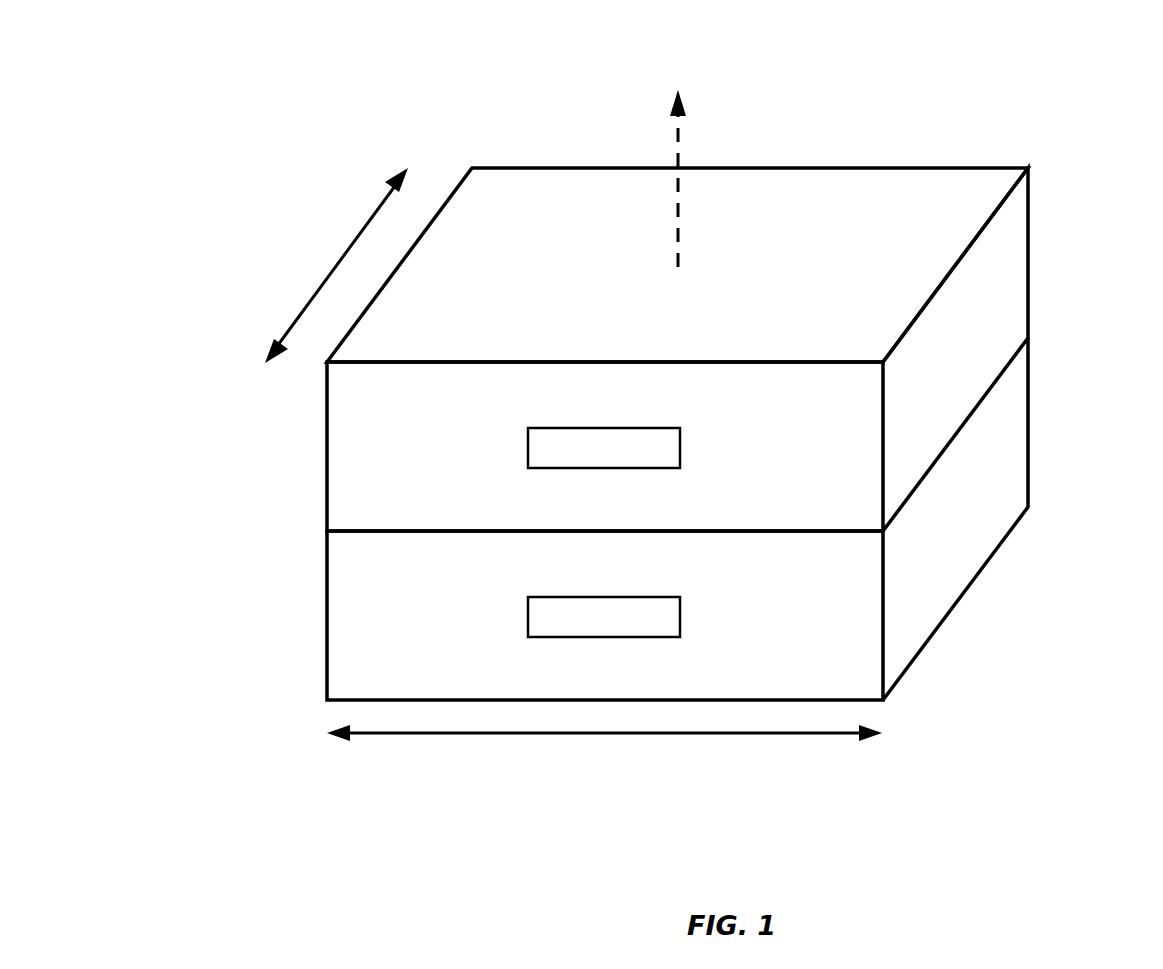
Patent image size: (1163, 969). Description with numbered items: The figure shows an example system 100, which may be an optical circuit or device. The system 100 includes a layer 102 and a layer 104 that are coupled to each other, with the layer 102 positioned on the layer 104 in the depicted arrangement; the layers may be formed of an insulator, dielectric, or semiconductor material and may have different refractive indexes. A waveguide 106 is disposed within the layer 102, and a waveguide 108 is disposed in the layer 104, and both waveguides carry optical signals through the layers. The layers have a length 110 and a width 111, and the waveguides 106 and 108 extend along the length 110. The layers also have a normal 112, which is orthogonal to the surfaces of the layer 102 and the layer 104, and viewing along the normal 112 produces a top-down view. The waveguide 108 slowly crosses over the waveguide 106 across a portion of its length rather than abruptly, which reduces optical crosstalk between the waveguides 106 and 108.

The system 100 is at (807, 42).
The layer 102 is at (1028, 265).
The layer 104 is at (1028, 452).
The waveguide 106 is at (680, 450).
The waveguide 108 is at (680, 618).
The length 110 is at (769, 733).
The width 111 is at (300, 313).
The normal 112 is at (678, 152).